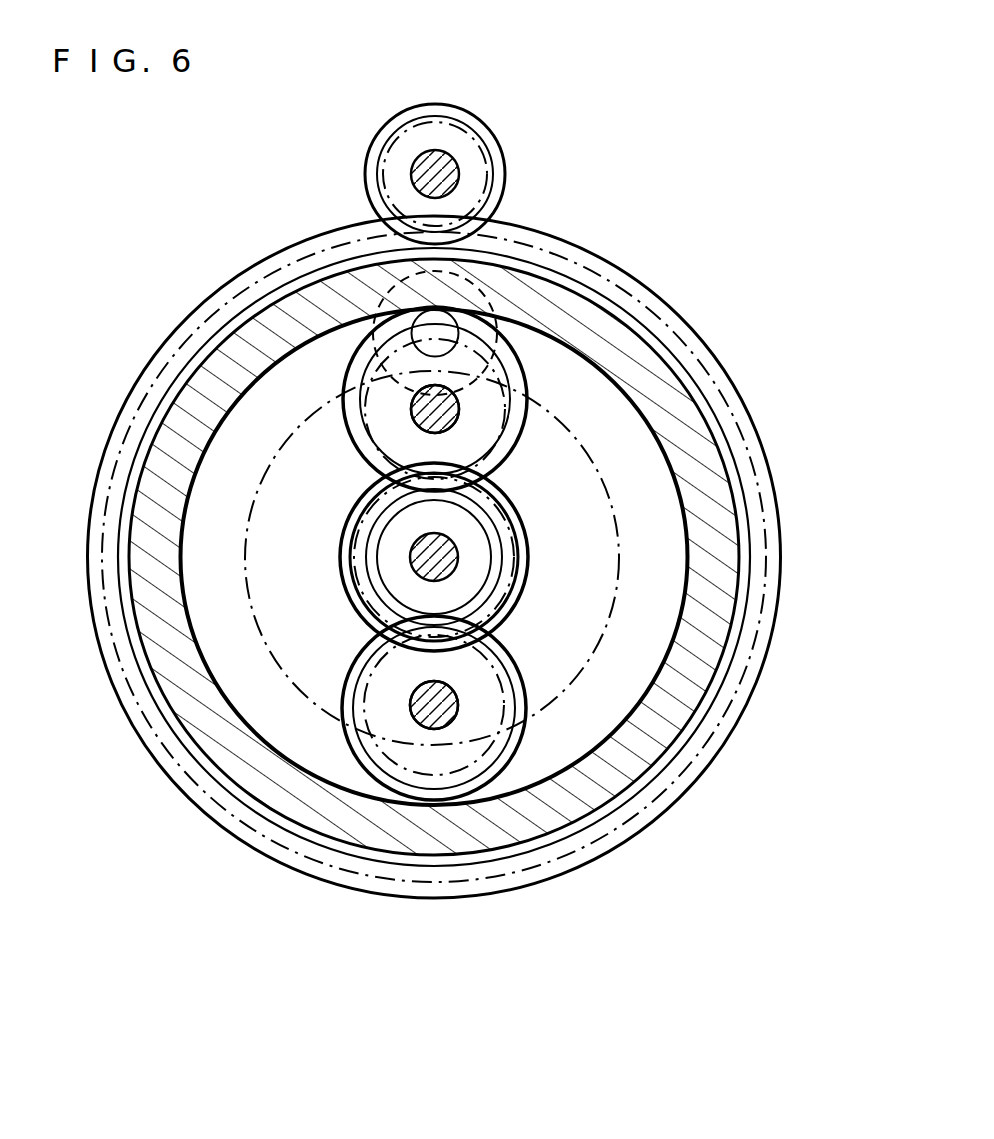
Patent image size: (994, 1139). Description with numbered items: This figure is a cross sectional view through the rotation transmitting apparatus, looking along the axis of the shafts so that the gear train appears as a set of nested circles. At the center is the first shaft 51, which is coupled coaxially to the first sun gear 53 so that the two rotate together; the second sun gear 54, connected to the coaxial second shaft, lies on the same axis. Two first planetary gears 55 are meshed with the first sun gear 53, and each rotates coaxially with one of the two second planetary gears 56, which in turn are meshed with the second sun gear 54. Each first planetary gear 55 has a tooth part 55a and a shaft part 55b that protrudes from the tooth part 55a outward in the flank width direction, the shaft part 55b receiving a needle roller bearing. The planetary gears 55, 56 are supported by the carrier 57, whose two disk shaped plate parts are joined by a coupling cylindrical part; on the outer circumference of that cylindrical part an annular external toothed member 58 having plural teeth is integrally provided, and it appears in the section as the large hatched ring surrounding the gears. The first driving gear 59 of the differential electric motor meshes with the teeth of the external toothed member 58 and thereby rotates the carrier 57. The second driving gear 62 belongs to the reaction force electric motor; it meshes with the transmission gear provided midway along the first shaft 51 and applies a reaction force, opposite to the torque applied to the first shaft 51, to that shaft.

The first shaft 51 is at (449, 565).
The first sun gear 53 is at (497, 523).
The second sun gear 54 is at (528, 548).
The first planetary gear 55 is at (522, 361).
The tooth part 55a is at (410, 402).
The shaft part 55b is at (410, 412).
The second planetary gear 56 is at (600, 325).
The carrier 57 is at (703, 481).
The external toothed member 58 is at (548, 242).
The first driving gear 59 is at (478, 122).
The second driving gear 62 is at (288, 268).